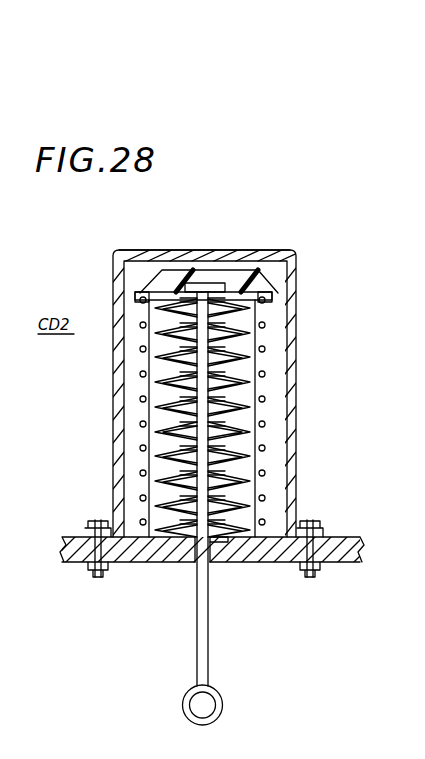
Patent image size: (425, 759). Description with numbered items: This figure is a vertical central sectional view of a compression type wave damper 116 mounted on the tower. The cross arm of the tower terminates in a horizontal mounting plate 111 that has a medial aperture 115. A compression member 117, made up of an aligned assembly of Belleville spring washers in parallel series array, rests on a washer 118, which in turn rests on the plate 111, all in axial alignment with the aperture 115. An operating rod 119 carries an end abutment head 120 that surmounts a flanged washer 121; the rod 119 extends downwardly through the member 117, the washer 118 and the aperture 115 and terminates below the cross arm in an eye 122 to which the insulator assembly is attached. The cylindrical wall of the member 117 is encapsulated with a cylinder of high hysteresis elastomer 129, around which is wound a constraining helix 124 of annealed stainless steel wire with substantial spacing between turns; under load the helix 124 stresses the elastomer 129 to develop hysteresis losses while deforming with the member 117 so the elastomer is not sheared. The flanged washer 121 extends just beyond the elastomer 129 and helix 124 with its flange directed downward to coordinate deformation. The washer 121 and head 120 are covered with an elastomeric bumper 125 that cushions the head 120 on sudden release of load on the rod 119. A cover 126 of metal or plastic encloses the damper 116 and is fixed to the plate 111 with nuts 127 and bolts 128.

The horizontal mounting plate 111 is at (342, 540).
The medial aperture 115 is at (192, 563).
The wave damper 116 is at (298, 421).
The compression member 117 is at (262, 343).
The washer 118 is at (230, 542).
The operating rod 119 is at (197, 612).
The end abutment head 120 is at (212, 283).
The flanged washer 121 is at (140, 293).
The eye 122 is at (213, 697).
The helix 124 is at (262, 382).
The elastomeric bumper 125 is at (265, 283).
The cover 126 is at (163, 250).
The nuts 127 is at (93, 572).
The bolts 128 is at (97, 520).
The elastomer 129 is at (150, 388).